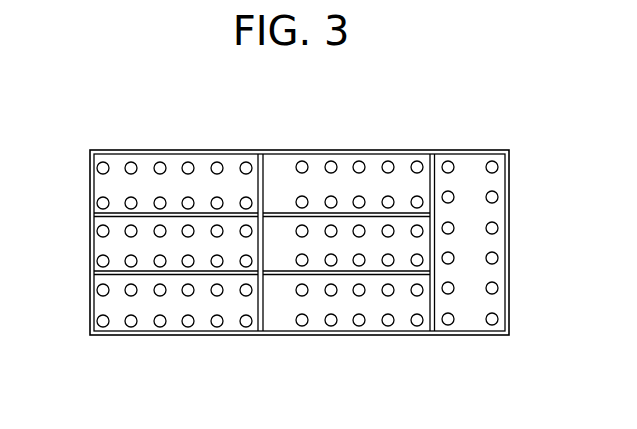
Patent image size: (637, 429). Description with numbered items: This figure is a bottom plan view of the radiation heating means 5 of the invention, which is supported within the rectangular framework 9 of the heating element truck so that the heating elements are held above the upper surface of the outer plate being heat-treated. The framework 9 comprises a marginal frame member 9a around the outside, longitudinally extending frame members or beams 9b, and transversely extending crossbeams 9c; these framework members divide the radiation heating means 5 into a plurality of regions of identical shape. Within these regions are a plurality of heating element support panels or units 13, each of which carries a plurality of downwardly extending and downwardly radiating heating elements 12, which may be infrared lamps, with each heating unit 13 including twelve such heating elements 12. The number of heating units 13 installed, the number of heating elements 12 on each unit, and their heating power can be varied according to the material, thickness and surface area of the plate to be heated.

The radiation heating means 5 is at (390, 122).
The framework 9 is at (82, 107).
The marginal frame member 9a is at (100, 150).
The longitudinally extending frame members 9b is at (119, 213).
The transversely extending crossbeams 9c is at (257, 180).
The heating elements 12 is at (92, 175).
The heating element support panels 13 is at (103, 192).